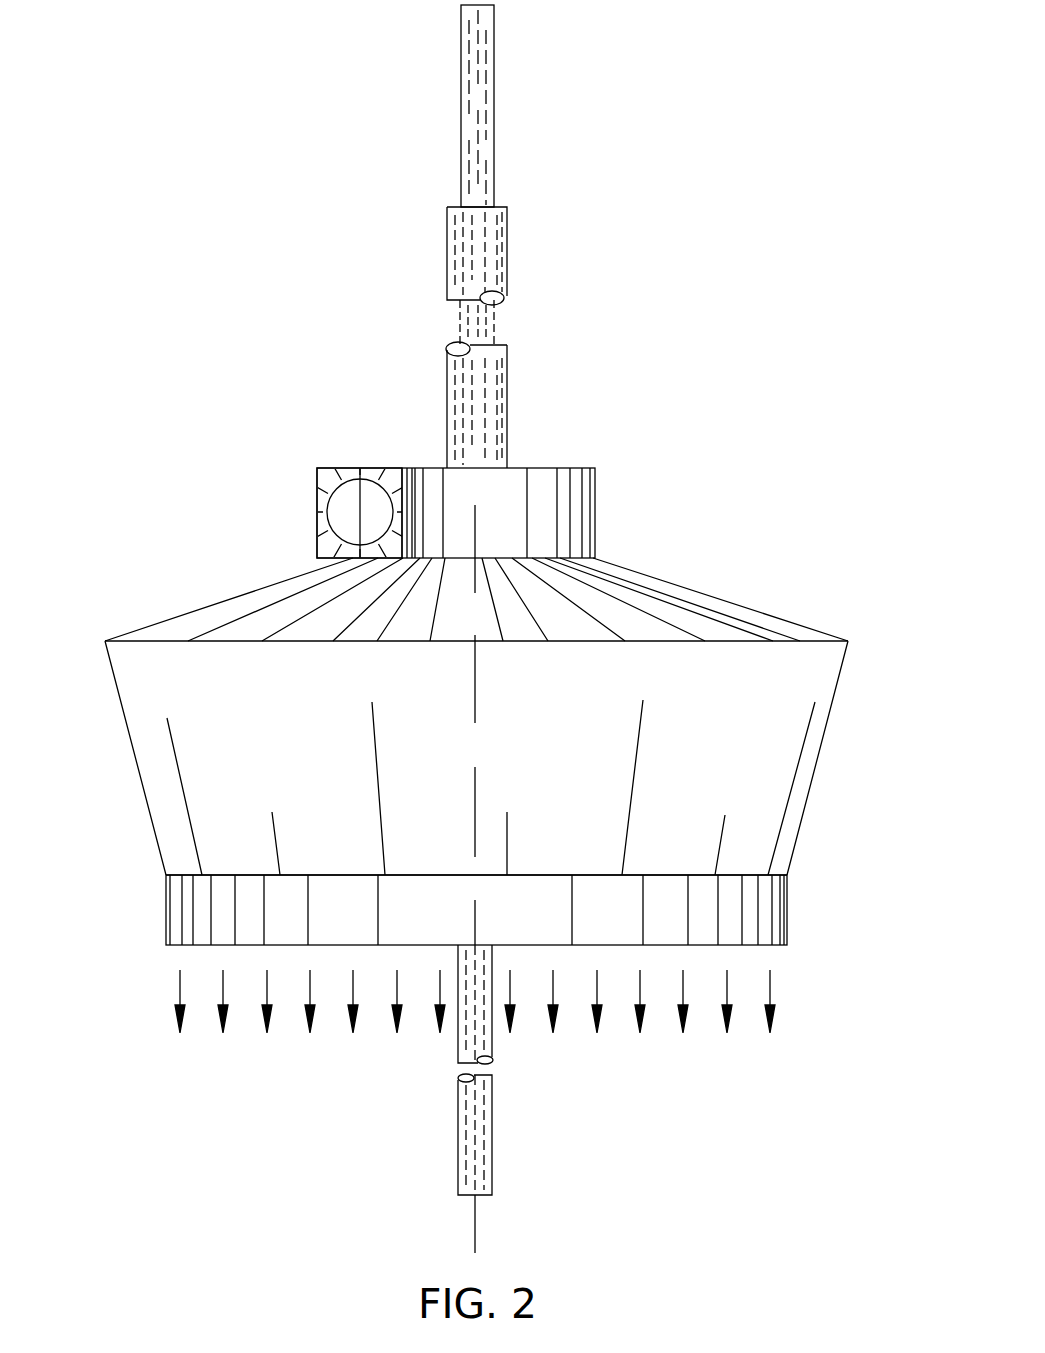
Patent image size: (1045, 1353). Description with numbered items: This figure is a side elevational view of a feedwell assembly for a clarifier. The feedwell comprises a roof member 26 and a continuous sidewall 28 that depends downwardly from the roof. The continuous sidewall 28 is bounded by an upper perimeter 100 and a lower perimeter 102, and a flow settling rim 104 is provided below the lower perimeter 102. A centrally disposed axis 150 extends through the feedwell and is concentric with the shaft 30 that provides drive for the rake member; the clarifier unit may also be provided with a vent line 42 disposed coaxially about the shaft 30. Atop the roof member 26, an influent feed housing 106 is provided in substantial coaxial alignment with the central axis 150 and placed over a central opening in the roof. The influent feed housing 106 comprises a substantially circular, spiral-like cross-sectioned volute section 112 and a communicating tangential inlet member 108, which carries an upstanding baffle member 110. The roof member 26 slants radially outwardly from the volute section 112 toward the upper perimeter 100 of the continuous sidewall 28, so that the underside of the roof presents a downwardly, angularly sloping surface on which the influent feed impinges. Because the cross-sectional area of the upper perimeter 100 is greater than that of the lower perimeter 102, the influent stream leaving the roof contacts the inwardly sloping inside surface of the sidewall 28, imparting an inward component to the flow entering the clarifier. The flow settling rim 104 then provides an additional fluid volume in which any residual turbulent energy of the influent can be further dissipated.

The roof member 26 is at (685, 618).
The continuous sidewall 28 is at (142, 782).
The driveshaft 30 is at (457, 1045).
The vent line 42 is at (508, 360).
The upper perimeter 100 is at (848, 640).
The lower perimeter 102 is at (787, 875).
The flow settling rim 104 is at (752, 915).
The influent feed housing 106 is at (595, 513).
The tangential inlet member 108 is at (337, 477).
The baffle member 110 is at (357, 520).
The volute section 112 is at (565, 467).
The central axis 150 is at (475, 1235).